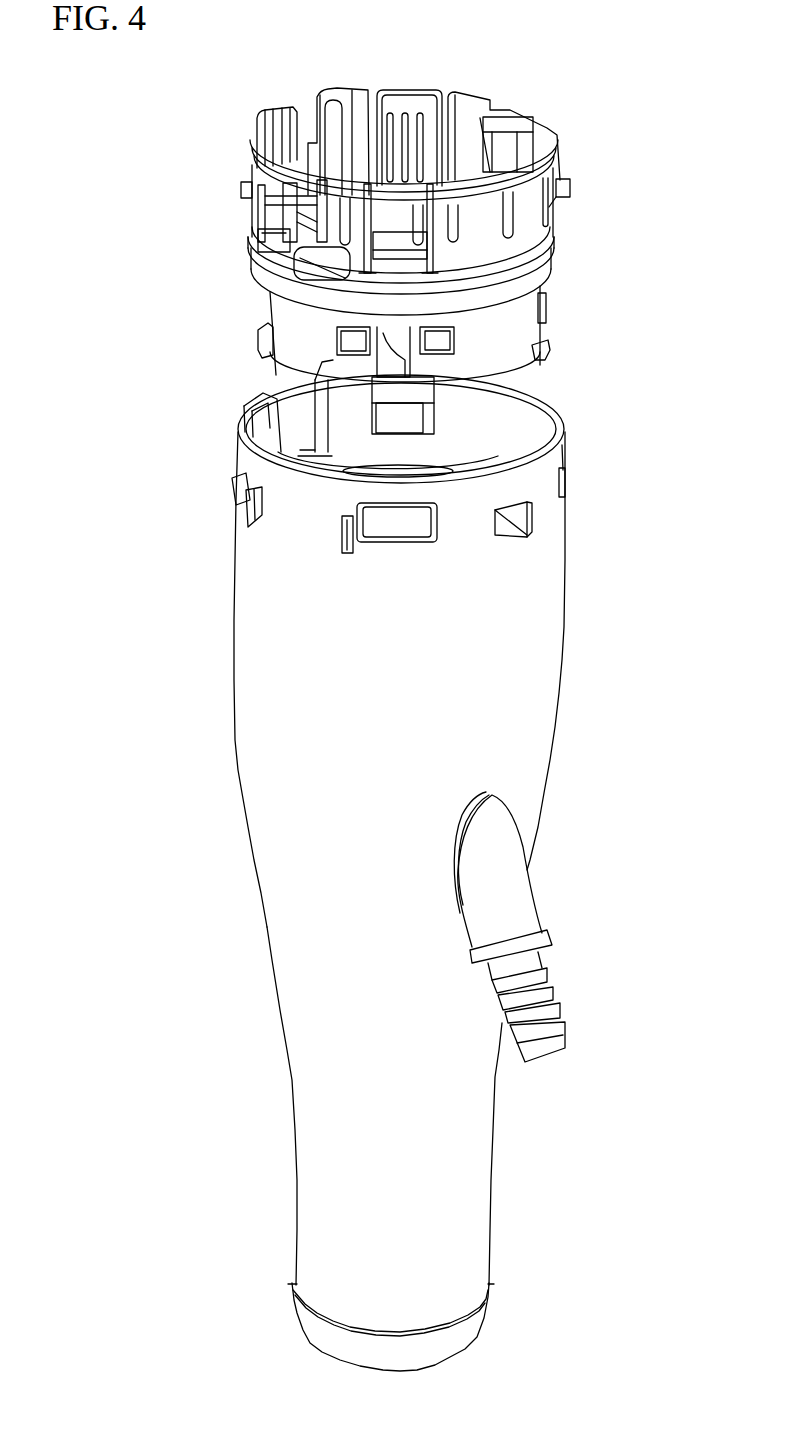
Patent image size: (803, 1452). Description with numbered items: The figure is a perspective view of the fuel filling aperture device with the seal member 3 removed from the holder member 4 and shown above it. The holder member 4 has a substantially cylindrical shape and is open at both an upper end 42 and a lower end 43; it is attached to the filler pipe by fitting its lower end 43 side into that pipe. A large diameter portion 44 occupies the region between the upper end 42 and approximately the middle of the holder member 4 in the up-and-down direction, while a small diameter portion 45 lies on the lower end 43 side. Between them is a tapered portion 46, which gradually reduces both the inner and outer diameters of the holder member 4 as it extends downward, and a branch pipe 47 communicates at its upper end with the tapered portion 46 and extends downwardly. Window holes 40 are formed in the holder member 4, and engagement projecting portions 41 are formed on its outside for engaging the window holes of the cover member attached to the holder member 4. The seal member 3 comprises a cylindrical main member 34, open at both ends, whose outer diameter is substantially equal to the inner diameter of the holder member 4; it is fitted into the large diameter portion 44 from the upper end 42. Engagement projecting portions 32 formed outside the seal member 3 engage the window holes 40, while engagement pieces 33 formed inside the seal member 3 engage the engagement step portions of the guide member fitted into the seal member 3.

The seal member 3 is at (550, 247).
The engagement projecting portions 32 is at (395, 242).
The engagement pieces 33 is at (500, 150).
The cylindrical main member 34 is at (548, 273).
The holder member 4 is at (518, 737).
The window holes 40 is at (399, 530).
The engagement projecting portions 41 is at (536, 520).
The upper end 42 is at (564, 414).
The lower end 43 is at (450, 1345).
The large diameter portion 44 is at (522, 653).
The small diameter portion 45 is at (450, 1185).
The tapered portion 46 is at (522, 820).
The branch pipe 47 is at (545, 972).